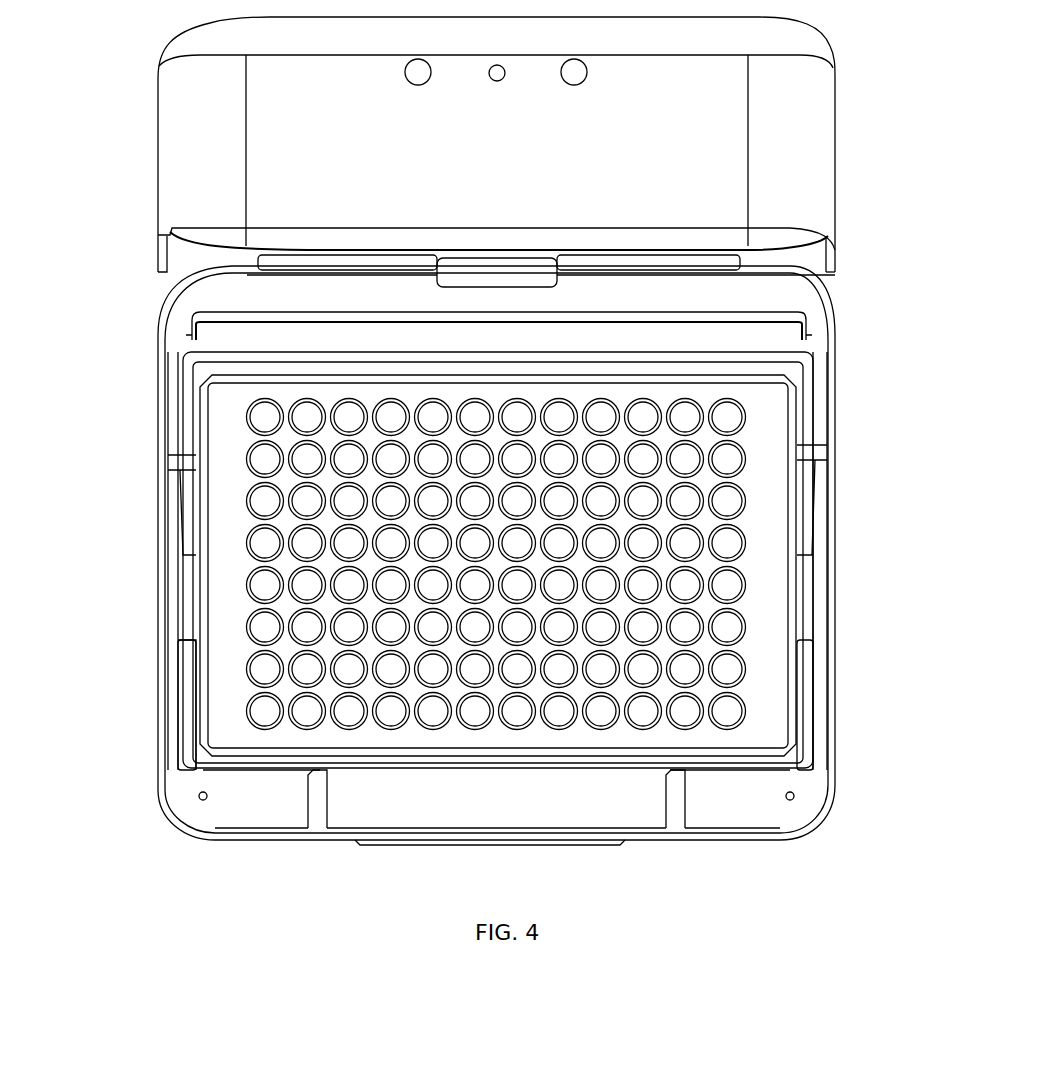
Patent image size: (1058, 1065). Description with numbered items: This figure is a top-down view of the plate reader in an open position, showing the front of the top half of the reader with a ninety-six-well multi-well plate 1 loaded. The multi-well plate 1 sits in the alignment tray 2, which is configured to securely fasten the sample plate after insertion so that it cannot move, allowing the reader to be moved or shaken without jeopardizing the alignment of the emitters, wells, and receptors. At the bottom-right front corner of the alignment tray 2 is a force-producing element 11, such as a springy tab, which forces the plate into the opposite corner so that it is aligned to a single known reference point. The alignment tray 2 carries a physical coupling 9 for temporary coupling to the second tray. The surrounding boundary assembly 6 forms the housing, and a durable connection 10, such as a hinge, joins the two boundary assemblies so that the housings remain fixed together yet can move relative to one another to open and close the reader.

The multi-well plate 1 is at (805, 586).
The alignment tray 2 is at (822, 516).
The boundary assembly 6 is at (843, 195).
The physical coupling 9 is at (812, 322).
The durable connection 10 is at (258, 262).
The force-producing element 11 is at (810, 715).